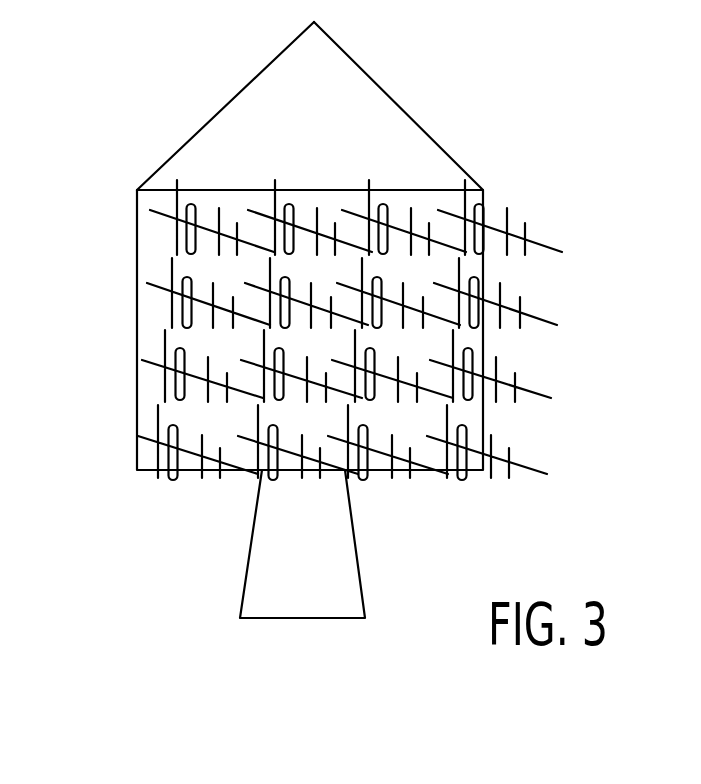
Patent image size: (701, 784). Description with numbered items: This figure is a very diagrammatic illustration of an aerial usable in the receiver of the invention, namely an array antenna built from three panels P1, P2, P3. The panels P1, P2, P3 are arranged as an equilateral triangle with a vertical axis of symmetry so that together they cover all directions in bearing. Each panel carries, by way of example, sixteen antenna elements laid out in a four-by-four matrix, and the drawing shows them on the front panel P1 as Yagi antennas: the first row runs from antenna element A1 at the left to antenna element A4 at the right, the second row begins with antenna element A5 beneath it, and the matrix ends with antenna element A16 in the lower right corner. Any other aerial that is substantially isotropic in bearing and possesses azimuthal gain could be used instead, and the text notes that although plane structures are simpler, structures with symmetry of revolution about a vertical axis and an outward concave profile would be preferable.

The panel P1 is at (223, 188).
The panel P2 is at (245, 86).
The panel P3 is at (375, 85).
The antenna element A1 is at (150, 211).
The antenna element A4 is at (452, 190).
The antenna element A5 is at (150, 286).
The antenna element A16 is at (465, 480).